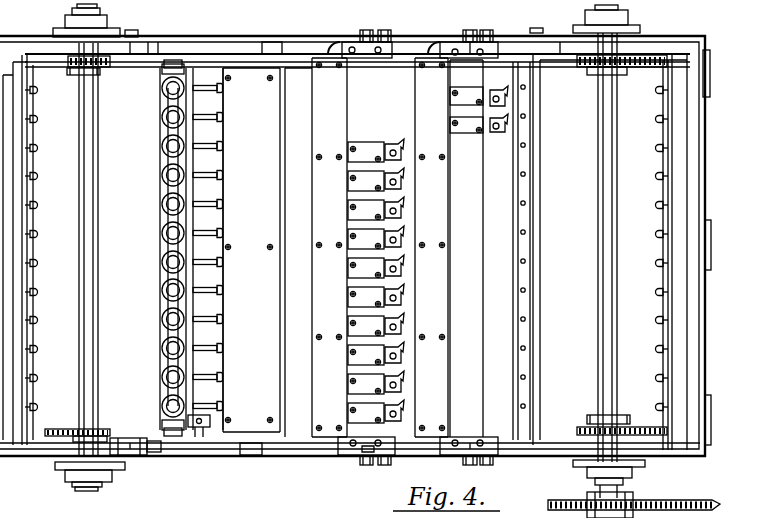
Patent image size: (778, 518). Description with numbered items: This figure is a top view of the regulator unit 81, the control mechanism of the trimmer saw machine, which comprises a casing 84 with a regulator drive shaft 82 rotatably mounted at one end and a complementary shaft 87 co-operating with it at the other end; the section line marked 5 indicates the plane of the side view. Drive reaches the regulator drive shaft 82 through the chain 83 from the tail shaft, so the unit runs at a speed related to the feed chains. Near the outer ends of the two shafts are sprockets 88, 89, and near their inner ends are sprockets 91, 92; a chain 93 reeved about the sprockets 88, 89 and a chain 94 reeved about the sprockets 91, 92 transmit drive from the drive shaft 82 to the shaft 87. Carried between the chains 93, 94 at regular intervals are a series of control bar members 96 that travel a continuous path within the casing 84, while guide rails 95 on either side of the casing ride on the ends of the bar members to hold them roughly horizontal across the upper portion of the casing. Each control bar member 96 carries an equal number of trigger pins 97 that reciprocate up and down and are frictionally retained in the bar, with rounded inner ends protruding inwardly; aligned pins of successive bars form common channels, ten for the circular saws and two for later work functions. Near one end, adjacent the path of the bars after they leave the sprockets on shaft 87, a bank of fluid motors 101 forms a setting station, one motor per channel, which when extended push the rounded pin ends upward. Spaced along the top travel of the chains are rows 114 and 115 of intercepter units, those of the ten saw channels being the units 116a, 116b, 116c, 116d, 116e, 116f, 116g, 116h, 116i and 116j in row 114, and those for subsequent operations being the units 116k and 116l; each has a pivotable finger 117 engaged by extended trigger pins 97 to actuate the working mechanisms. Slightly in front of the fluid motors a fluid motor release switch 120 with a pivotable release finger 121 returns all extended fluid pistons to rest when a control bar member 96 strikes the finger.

The regulator unit 81 is at (310, 458).
The regulator drive shaft 82 is at (600, 345).
The chain 83 is at (668, 506).
The casing 84 is at (282, 457).
The complementary shaft 87 is at (80, 153).
The sprocket 88 is at (70, 77).
The sprocket 89 is at (590, 70).
The sprocket 91 is at (72, 422).
The sprocket 92 is at (590, 416).
The chain 93 is at (110, 70).
The chain 94 is at (113, 427).
The guide rails 95 is at (262, 52).
The control bar members 96 is at (170, 60).
The trigger pins 97 is at (36, 302).
The fluid motors 101 is at (162, 318).
The row of intercepter units 114 is at (364, 96).
The row of intercepter units 115 is at (478, 80).
The intercepter unit 116a is at (403, 414).
The intercepter unit 116b is at (357, 393).
The intercepter unit 116c is at (403, 357).
The intercepter unit 116d is at (357, 334).
The intercepter unit 116e is at (403, 300).
The intercepter unit 116f is at (357, 277).
The intercepter unit 116g is at (403, 242).
The intercepter unit 116h is at (357, 218).
The intercepter unit 116i is at (403, 182).
The intercepter unit 116j is at (352, 160).
The intercepter unit 116k is at (505, 127).
The intercepter unit 116l is at (505, 98).
The pivotable finger 117 is at (396, 148).
The fluid motor release switch 120 is at (174, 445).
The release finger 121 is at (204, 416).
The section line 5- 5 is at (725, 426).